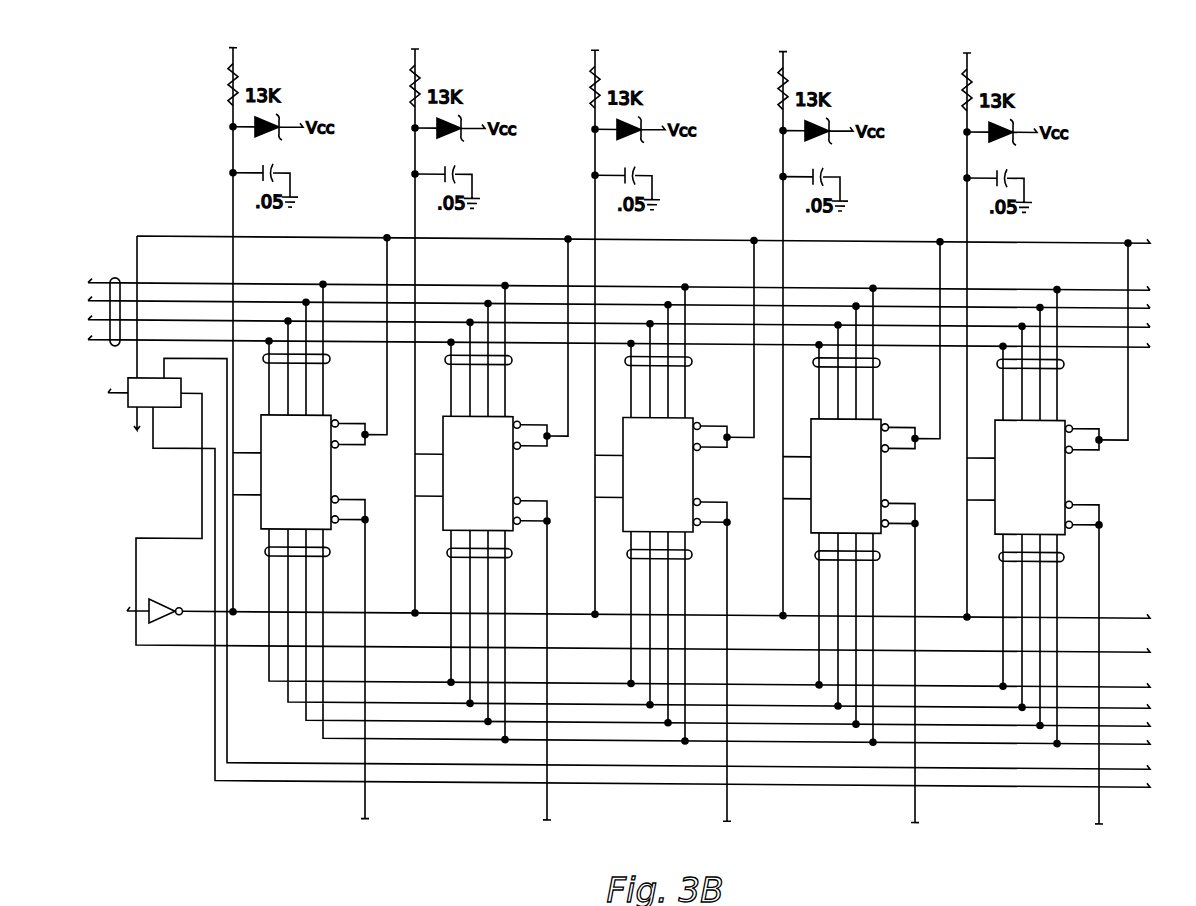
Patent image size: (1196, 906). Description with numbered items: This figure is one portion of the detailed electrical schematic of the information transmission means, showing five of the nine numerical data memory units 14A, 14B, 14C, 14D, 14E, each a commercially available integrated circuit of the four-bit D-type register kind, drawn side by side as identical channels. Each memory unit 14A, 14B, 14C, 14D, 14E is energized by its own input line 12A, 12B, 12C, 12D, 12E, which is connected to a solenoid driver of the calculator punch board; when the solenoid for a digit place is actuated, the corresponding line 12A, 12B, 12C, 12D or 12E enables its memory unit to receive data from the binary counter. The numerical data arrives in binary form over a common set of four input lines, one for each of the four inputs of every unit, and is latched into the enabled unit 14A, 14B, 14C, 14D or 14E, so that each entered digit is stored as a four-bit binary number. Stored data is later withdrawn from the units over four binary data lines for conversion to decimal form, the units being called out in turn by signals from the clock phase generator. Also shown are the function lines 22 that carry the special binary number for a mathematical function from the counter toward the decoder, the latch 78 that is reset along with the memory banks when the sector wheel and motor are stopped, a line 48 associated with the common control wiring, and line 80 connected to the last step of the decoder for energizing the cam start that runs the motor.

The input line 12A is at (260, 78).
The input line 12B is at (442, 79).
The input line 12C is at (622, 80).
The input line 12D is at (811, 82).
The input line 12E is at (994, 83).
The numerical data memory unit 14A is at (306, 405).
The numerical data memory unit 14B is at (488, 406).
The numerical data memory unit 14C is at (669, 407).
The numerical data memory unit 14D is at (857, 409).
The numerical data memory unit 14E is at (1040, 410).
The lines 22 is at (115, 278).
The control line with inverter 48 is at (1125, 594).
The latch 78 is at (126, 408).
The line 80 is at (241, 737).